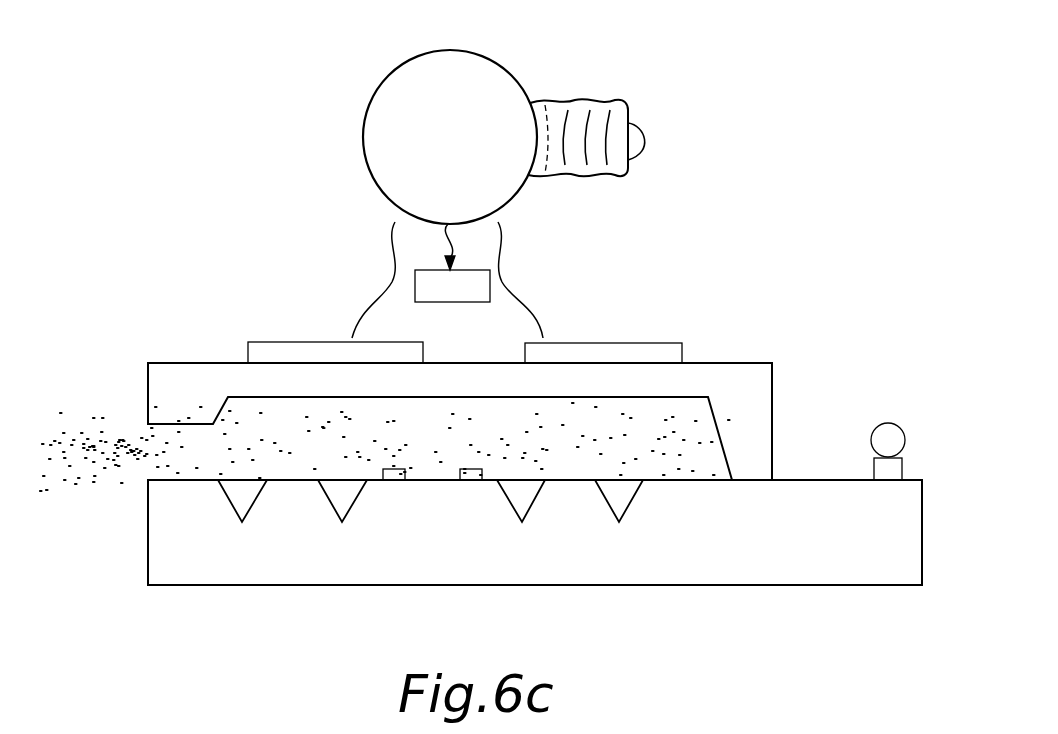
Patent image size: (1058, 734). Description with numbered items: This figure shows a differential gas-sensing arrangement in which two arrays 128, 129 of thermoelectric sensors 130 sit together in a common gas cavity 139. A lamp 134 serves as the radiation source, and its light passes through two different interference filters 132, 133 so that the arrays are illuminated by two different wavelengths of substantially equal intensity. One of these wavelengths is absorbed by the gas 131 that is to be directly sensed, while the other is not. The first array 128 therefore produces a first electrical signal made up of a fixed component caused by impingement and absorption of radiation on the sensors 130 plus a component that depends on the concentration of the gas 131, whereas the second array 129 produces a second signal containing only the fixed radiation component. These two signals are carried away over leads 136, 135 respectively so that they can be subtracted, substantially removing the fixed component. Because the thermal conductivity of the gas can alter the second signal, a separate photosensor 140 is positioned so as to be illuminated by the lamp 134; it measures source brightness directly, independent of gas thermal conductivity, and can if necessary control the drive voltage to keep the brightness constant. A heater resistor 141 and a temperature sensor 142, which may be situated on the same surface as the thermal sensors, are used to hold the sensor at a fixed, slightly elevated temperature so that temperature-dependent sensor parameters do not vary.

The first array of thermoelectric sensors 128 is at (363, 585).
The second array of thermoelectric sensors 129 is at (685, 585).
The thermoelectric sensors 130 is at (238, 478).
The gas 131 is at (80, 472).
The first interference filter 132 is at (289, 341).
The second interference filter 133 is at (650, 341).
The lamp 134 is at (467, 50).
The lead 135 is at (884, 396).
The lead 136 is at (888, 451).
The gas cavity 139 is at (435, 457).
The photosensor 140 is at (490, 286).
The heater resistor 141 is at (468, 481).
The temperature sensor 142 is at (393, 481).